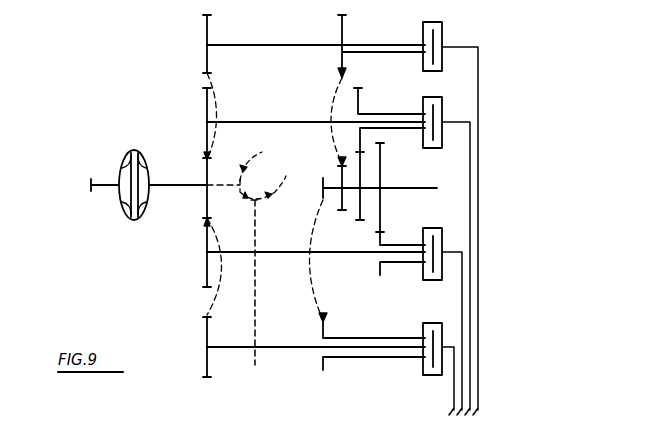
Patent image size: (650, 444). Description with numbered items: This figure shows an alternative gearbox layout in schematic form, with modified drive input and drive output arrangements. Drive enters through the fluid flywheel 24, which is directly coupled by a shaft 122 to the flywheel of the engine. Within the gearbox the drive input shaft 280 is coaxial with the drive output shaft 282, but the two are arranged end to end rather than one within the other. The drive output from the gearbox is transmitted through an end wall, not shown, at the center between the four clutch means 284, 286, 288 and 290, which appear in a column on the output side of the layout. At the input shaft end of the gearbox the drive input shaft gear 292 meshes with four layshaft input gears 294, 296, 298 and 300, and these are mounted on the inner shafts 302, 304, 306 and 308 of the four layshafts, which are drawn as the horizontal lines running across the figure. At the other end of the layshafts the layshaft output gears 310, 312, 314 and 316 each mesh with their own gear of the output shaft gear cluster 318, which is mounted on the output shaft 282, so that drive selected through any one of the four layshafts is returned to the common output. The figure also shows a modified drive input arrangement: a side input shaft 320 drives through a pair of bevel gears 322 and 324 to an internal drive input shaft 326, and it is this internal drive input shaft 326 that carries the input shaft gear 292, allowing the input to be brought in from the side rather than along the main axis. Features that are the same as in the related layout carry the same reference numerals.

The fluid flywheel 24 is at (125, 216).
The shaft 122 is at (112, 182).
The drive input shaft 280 is at (172, 190).
The drive output shaft 282 is at (392, 190).
The clutch means 284 is at (432, 377).
The clutch means 286 is at (430, 282).
The clutch means 288 is at (440, 150).
The clutch means 290 is at (430, 73).
The drive input shaft gear 292 is at (207, 168).
The layshaft input gear 294 is at (207, 338).
The layshaft input gear 296 is at (207, 280).
The layshaft input gear 298 is at (207, 95).
The layshaft input gear 300 is at (207, 42).
The inner shaft 302 is at (270, 347).
The inner shaft 304 is at (325, 252).
The inner shaft 306 is at (250, 122).
The inner shaft 308 is at (258, 45).
The layshaft output gear 310 is at (323, 368).
The layshaft output gear 312 is at (385, 272).
The layshaft output gear 314 is at (360, 100).
The layshaft output gear 316 is at (344, 27).
The output shaft gear cluster 318 is at (422, 162).
The side input shaft 320 is at (256, 272).
The bevel gear 322 is at (266, 182).
The bevel gear 324 is at (258, 147).
The internal drive input shaft 326 is at (224, 194).